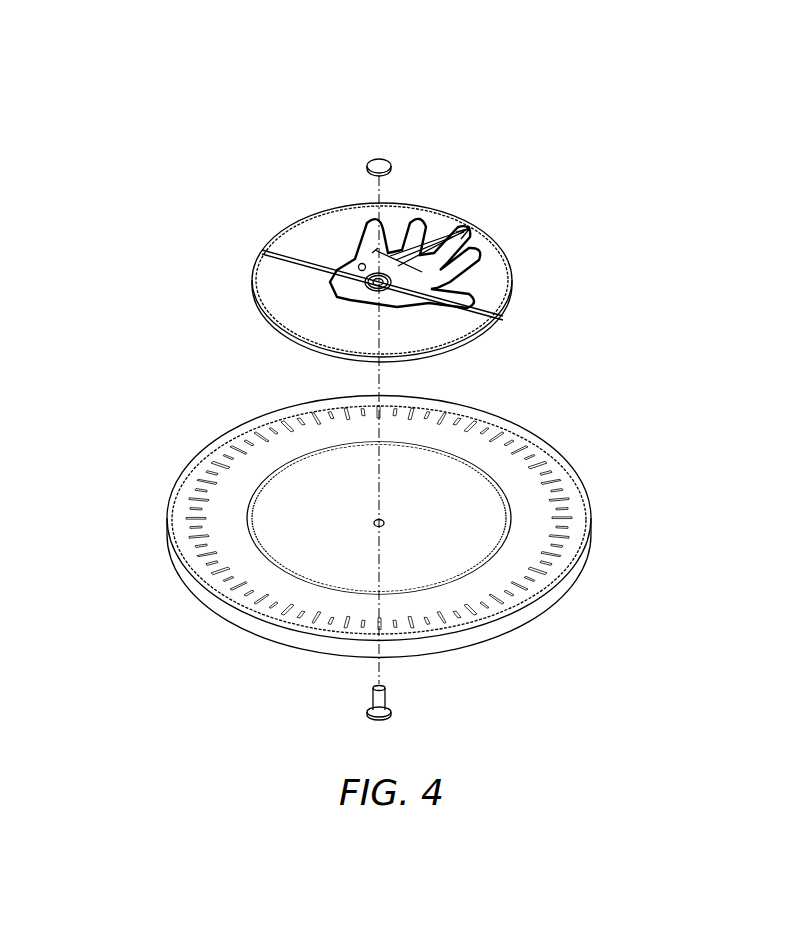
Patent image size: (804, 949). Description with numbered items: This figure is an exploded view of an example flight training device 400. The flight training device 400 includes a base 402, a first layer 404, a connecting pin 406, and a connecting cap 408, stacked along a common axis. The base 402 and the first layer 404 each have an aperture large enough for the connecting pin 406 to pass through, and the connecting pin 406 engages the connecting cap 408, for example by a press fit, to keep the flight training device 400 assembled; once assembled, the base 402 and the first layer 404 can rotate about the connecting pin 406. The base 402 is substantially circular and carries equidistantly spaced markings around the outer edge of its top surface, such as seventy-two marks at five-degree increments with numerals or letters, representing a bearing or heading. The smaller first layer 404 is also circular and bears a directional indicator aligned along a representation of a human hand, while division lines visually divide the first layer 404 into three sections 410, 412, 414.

The flight training device 400 is at (121, 95).
The base 402 is at (592, 524).
The first layer 404 is at (508, 289).
The connecting pin 406 is at (390, 713).
The connecting cap 408 is at (392, 168).
The section 410 is at (427, 337).
The section 412 is at (318, 229).
The section 414 is at (491, 259).